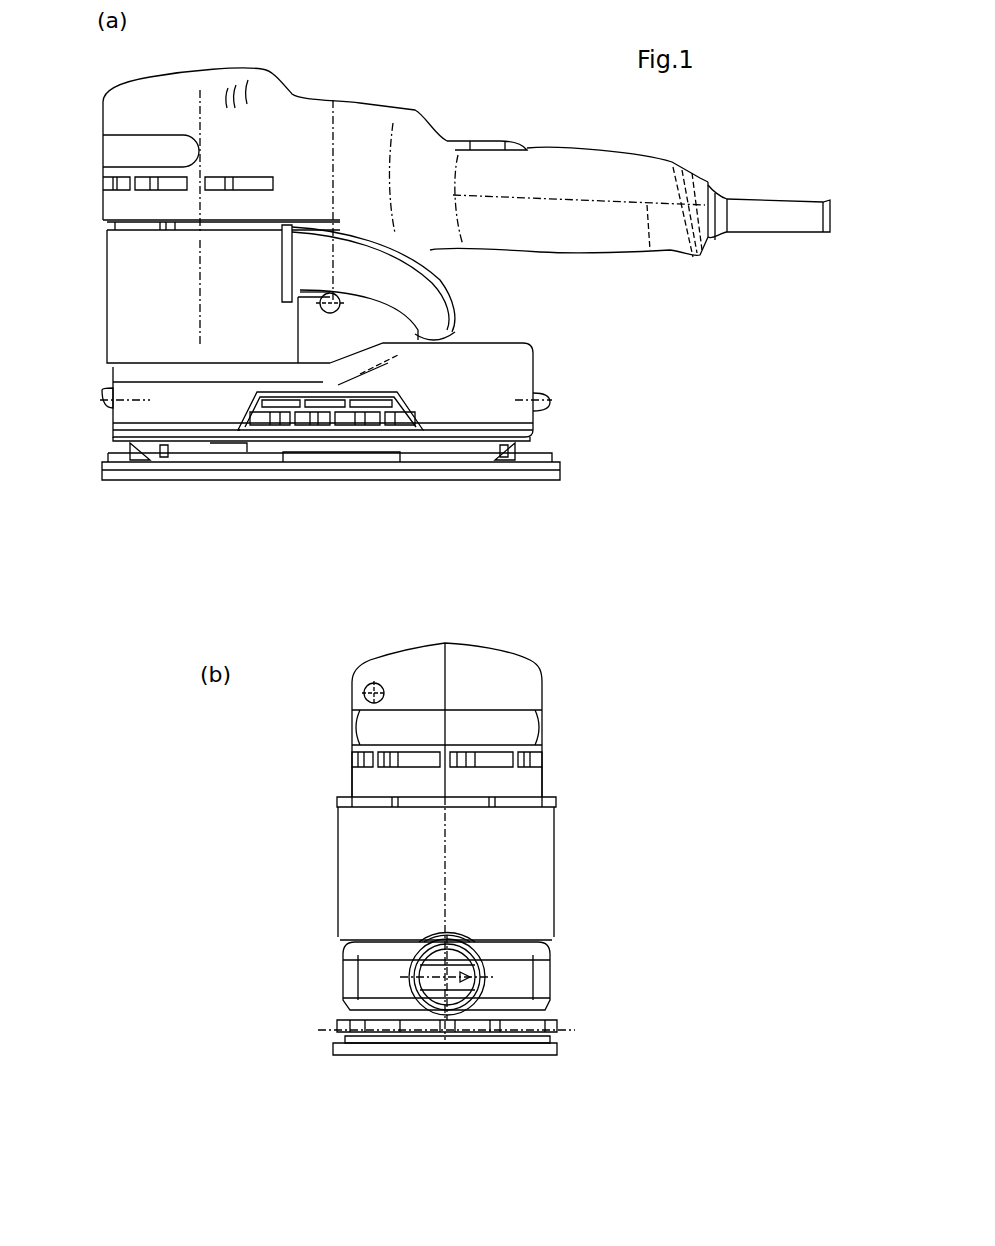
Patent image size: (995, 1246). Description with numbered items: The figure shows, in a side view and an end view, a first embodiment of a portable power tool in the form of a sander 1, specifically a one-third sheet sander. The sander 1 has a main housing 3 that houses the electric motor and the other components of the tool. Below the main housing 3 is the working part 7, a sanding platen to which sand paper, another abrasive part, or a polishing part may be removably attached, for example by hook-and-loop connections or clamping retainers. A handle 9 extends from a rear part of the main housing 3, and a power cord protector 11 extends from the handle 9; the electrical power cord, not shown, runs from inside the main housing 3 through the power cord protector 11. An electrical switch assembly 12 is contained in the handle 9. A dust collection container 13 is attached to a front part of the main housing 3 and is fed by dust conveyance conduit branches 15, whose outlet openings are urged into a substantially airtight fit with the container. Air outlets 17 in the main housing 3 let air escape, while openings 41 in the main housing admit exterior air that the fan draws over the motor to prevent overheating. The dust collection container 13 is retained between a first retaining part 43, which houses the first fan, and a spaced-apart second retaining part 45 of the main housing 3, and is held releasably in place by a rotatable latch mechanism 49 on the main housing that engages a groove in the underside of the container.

The sander 1 is at (445, 70).
The main housing 3 is at (415, 142).
The working part 7 is at (447, 455).
The handle 9 is at (617, 170).
The power cord protector 11 is at (757, 220).
The electrical switch assembly 12 is at (502, 150).
The dust collection container 13 is at (133, 288).
The dust conveyance conduit branches 15 is at (423, 293).
The air outlets 17 is at (242, 185).
The openings 41 is at (390, 402).
The first retaining part 43 is at (523, 783).
The second retaining part 45 is at (538, 972).
The rotatable latch mechanism 49 is at (452, 993).